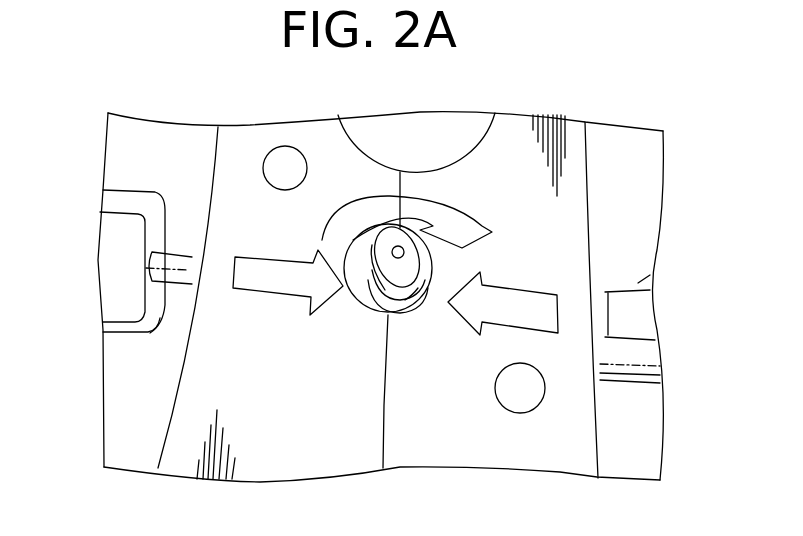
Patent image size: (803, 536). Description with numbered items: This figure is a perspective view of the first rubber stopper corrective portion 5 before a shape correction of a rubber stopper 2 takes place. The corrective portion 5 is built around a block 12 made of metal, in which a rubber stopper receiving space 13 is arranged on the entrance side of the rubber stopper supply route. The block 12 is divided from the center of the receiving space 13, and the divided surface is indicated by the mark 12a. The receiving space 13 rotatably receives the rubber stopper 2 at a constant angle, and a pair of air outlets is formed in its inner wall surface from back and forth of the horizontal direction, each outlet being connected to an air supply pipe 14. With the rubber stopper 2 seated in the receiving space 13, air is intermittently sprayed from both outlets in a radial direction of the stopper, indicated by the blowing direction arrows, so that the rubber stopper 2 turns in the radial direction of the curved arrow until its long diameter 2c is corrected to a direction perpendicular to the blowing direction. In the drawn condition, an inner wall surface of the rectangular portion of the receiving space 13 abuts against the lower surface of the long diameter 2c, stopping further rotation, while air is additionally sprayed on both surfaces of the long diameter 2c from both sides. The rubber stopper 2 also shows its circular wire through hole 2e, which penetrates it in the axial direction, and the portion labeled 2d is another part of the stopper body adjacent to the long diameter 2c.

The first rubber stopper corrective portion 5 is at (721, 205).
The block 12 is at (367, 440).
The divided surface 12a is at (383, 407).
The air supply pipe 14 is at (170, 263).
The rubber stopper receiving space 13 is at (357, 282).
The rubber stopper 2 is at (385, 298).
The long diameter 2c is at (378, 280).
The cam portion 2d is at (410, 300).
The wire through hole 2e is at (404, 252).